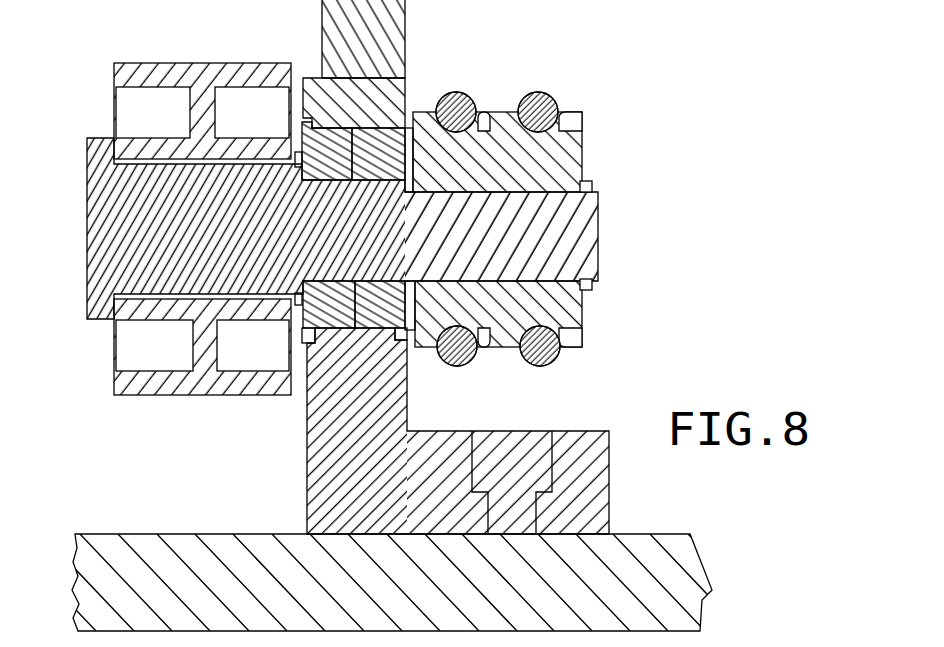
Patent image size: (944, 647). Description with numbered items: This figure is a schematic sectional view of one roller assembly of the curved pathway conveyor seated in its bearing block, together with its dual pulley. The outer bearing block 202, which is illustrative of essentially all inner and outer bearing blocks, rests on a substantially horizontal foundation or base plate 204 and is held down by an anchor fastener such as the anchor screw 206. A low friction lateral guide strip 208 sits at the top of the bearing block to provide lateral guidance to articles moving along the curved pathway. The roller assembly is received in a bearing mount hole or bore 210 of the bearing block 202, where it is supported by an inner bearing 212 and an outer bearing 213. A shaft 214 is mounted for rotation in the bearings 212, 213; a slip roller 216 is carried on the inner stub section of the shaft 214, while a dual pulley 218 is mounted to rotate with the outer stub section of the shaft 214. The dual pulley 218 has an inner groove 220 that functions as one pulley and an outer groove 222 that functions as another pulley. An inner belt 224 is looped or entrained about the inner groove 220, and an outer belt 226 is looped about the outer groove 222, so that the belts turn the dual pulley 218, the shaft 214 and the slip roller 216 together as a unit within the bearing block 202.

The outer bearing block 202 is at (590, 502).
The base plate 204 is at (195, 534).
The anchor screw 206 is at (515, 448).
The lateral guide strip 208 is at (340, 13).
The bearing mount bore 210 is at (338, 330).
The inner bearing 212 is at (333, 315).
The outer bearing 213 is at (388, 318).
The shaft 214 is at (108, 283).
The slip roller 216 is at (177, 74).
The dual pulley 218 is at (566, 167).
The inner groove 220 is at (489, 110).
The outer groove 222 is at (585, 128).
The inner belt 224 is at (440, 94).
The outer belt 226 is at (526, 92).